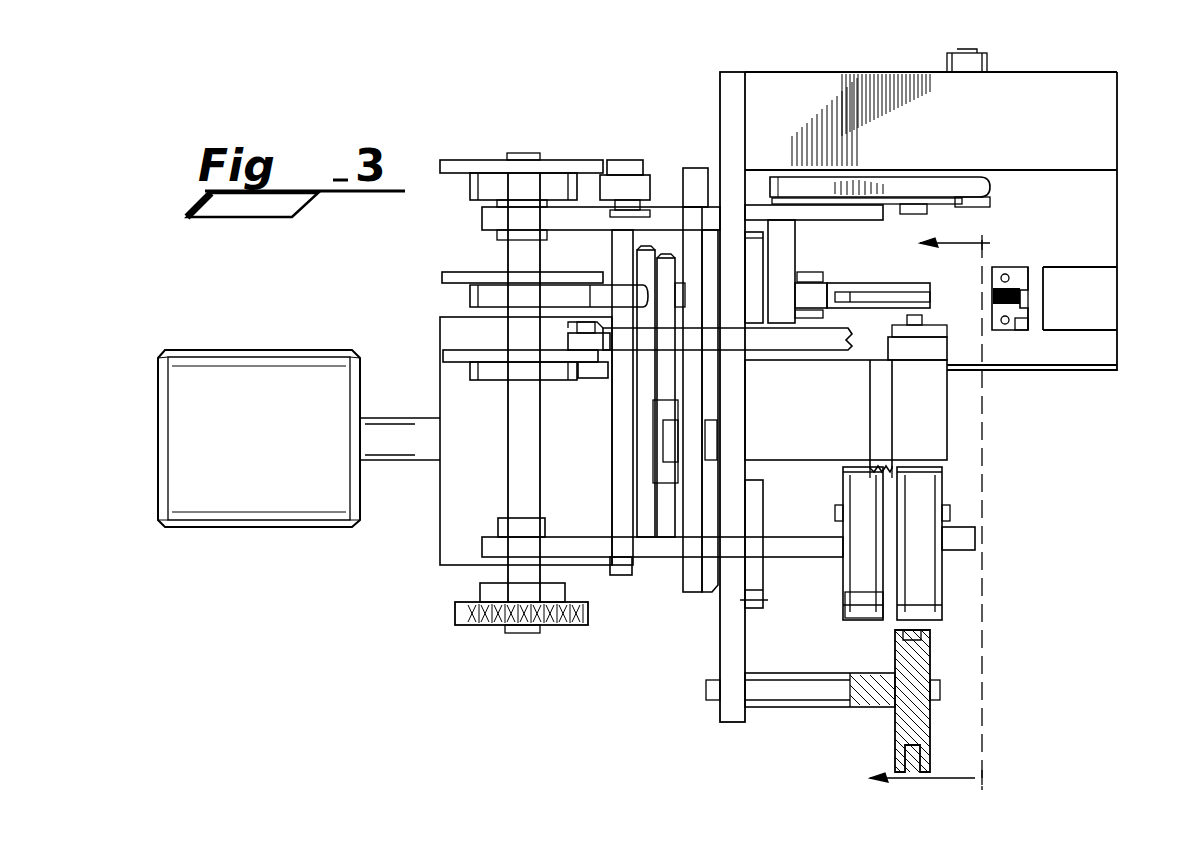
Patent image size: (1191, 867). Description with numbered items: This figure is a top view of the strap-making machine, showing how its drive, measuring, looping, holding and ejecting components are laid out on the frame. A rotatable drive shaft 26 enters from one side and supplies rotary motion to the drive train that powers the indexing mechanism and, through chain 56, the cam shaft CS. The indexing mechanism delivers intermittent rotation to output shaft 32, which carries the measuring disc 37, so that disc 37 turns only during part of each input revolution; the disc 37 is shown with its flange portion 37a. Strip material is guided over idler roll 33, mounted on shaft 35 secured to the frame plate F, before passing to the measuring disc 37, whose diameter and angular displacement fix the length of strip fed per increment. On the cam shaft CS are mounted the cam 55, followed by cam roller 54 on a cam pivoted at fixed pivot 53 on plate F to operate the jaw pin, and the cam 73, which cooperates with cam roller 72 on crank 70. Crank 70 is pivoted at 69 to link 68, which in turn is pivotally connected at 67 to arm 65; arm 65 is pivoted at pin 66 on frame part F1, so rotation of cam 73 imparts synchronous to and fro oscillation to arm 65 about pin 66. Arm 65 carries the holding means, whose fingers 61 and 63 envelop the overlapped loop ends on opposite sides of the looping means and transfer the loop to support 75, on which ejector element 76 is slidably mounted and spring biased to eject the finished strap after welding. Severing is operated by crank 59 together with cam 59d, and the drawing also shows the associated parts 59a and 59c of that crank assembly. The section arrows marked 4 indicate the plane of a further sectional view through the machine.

The rotatable drive shaft 26 is at (282, 505).
The output shaft 32 is at (975, 536).
The idler roll 33 is at (900, 722).
The shaft 35 is at (805, 692).
The disc 37 is at (918, 508).
The drum flange 37a is at (847, 590).
The fixed pivot 53 is at (622, 574).
The cam roller 54 is at (582, 294).
The cam 55 is at (470, 292).
The chain 56 is at (460, 613).
The crank 59 is at (780, 332).
The plate 59a is at (688, 590).
The bracket 59c is at (592, 372).
The cam 59d is at (462, 347).
The finger 61 is at (862, 272).
The finger 63 is at (812, 318).
The arm 65 is at (905, 190).
The pin 66 is at (975, 202).
The pivotal connection 67 is at (913, 212).
The link 68 is at (830, 248).
The pivot 69 is at (652, 180).
The crank 70 is at (628, 188).
The cam roller 72 is at (636, 174).
The cam 73 is at (463, 174).
The support 75 is at (1060, 285).
The ejector element 76 is at (1023, 332).
The cam shaft CS is at (510, 470).
The frame plate F is at (720, 80).
The frame part F1 is at (1105, 93).
The section line 4 is at (944, 507).